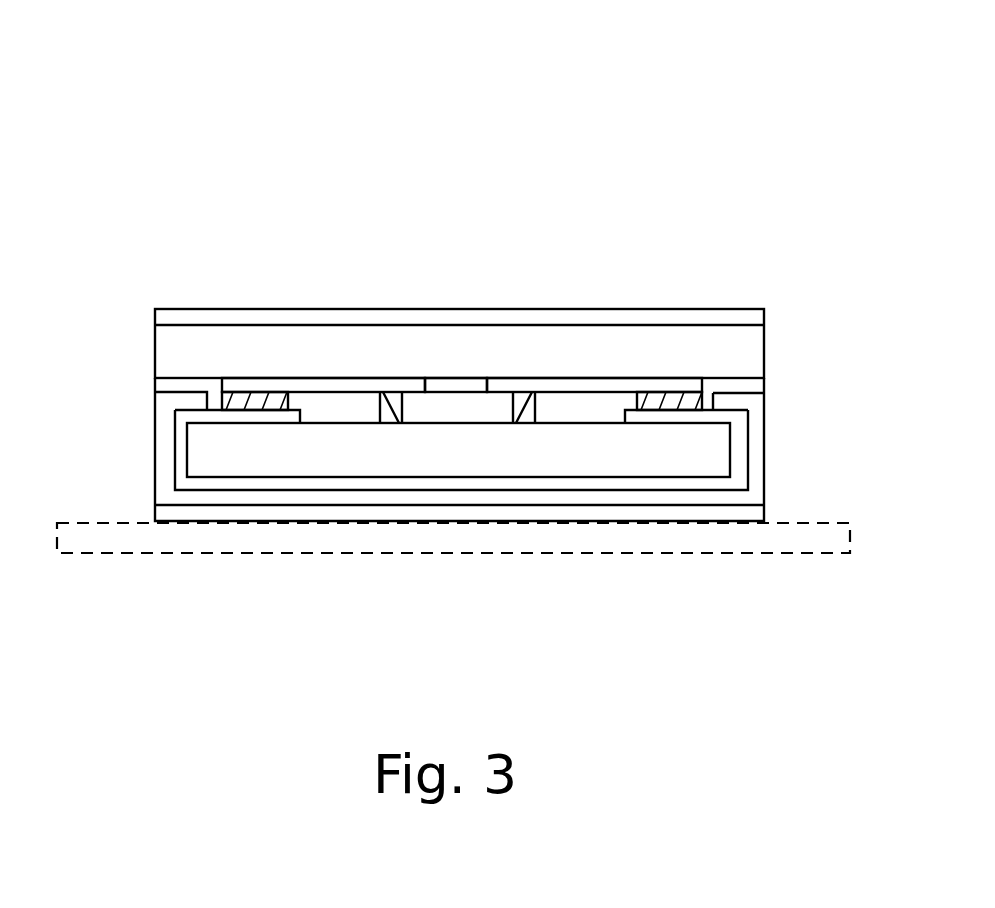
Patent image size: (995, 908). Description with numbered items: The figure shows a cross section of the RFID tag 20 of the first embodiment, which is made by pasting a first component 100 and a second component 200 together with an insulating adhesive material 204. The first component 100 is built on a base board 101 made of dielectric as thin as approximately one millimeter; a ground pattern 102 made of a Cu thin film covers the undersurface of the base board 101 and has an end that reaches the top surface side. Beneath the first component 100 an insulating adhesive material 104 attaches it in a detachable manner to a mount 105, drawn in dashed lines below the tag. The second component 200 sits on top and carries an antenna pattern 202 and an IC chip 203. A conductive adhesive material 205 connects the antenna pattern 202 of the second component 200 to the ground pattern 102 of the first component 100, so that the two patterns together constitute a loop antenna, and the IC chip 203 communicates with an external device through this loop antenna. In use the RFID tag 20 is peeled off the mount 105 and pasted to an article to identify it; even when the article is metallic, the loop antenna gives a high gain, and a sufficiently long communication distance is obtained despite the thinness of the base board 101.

The RFID tag 20 is at (580, 147).
The first component 100 is at (446, 516).
The base board 101 is at (243, 460).
The ground pattern 102 is at (182, 445).
The insulating adhesive material 104 is at (335, 513).
The mount 105 is at (655, 557).
The second component 200 is at (770, 310).
The antenna pattern 202 is at (321, 385).
The IC chip 203 is at (462, 407).
The insulating adhesive material 204 is at (572, 408).
The conductive adhesive material 205 is at (248, 400).